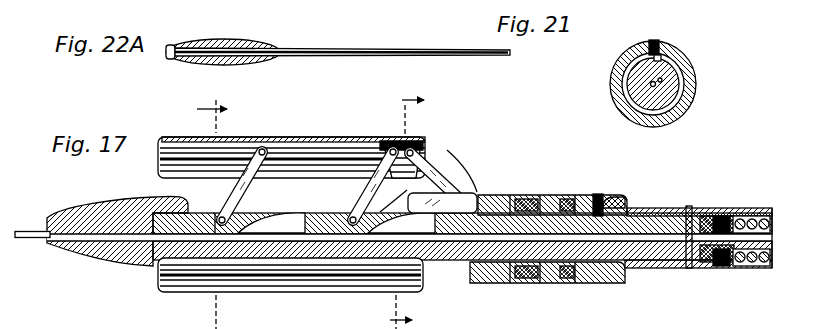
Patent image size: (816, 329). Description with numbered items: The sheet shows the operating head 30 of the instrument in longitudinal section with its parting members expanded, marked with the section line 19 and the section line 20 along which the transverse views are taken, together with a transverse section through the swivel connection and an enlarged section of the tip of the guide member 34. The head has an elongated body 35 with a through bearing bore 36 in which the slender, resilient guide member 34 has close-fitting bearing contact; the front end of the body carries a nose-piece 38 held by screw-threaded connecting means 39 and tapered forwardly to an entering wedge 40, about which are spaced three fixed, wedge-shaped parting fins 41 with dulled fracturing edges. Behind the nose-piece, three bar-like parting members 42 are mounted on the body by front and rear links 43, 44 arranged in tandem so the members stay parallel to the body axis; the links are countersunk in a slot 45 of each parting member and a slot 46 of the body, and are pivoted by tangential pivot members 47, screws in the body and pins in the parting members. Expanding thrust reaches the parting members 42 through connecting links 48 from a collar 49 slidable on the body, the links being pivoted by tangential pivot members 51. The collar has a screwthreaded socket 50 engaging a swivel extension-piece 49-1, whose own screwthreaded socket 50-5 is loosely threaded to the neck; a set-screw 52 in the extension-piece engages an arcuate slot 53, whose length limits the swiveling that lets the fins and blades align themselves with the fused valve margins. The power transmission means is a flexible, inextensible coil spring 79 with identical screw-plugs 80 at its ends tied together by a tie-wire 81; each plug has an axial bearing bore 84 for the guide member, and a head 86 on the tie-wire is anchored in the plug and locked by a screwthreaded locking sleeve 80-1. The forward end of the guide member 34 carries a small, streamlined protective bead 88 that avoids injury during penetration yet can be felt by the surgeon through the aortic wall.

In FIG. 17, the section line 19— 19 is at (201, 214).
In FIG. 17, the section line 20— 20 is at (412, 203).
In FIG. 17, the operating head 30 is at (598, 193).
In FIG. 22A, the guide member 34 is at (390, 49).
In FIG. 17, the guide member 34 is at (538, 285).
In FIG. 21, the body 35 is at (614, 96).
In FIG. 17, the body 35 is at (778, 215).
In FIG. 21, the bearing bore 36 is at (697, 70).
In FIG. 17, the bearing bore 36 is at (512, 195).
In FIG. 17, the nose-piece 38 is at (93, 210).
In FIG. 17, the screw-threaded connecting means 39 is at (157, 281).
In FIG. 17, the entering wedge 40 is at (57, 250).
In FIG. 17, the fins 41 is at (140, 194).
In FIG. 17, the parting members 42 is at (344, 136).
In FIG. 17, the front links 43 is at (250, 141).
In FIG. 17, the rear links 44 is at (404, 140).
In FIG. 17, the slot 45 is at (307, 136).
In FIG. 17, the slot 46 is at (268, 215).
In FIG. 17, the pivot members 47 is at (283, 134).
In FIG. 17, the connecting links 48 is at (476, 180).
In FIG. 17, the collar 49 is at (535, 193).
In FIG. 17, the swivel extension-piece 49-1 is at (627, 196).
In FIG. 21, the screwthreaded socket 50 is at (618, 66).
In FIG. 17, the screwthreaded socket 50 is at (520, 285).
In FIG. 17, the screwthreaded socket 50-5 is at (576, 285).
In FIG. 17, the pivot members 51 is at (428, 140).
In FIG. 21, the set-screw 52 is at (656, 40).
In FIG. 17, the set-screw 52 is at (604, 195).
In FIG. 21, the arcuate slot 53 is at (633, 50).
In FIG. 17, the arcuate slot 53 is at (622, 203).
In FIG. 17, the coil spring 79 is at (740, 270).
In FIG. 17, the screw-plug 80 is at (703, 213).
In FIG. 17, the locking sleeve 80-1 is at (700, 270).
In FIG. 17, the tie-wire 81 is at (748, 213).
In FIG. 17, the axial bearing bore 84 is at (688, 208).
In FIG. 17, the head 86 is at (734, 210).
In FIG. 22A, the protective bead 88 is at (171, 62).